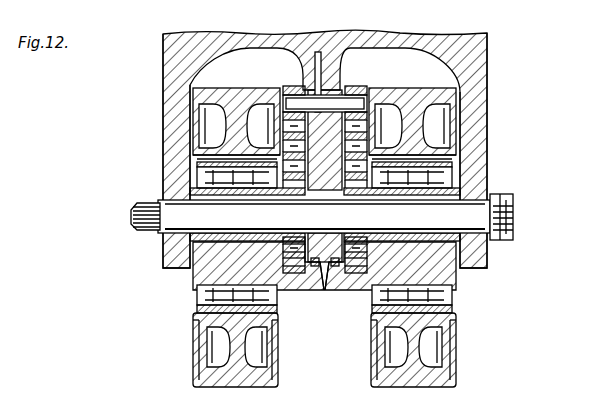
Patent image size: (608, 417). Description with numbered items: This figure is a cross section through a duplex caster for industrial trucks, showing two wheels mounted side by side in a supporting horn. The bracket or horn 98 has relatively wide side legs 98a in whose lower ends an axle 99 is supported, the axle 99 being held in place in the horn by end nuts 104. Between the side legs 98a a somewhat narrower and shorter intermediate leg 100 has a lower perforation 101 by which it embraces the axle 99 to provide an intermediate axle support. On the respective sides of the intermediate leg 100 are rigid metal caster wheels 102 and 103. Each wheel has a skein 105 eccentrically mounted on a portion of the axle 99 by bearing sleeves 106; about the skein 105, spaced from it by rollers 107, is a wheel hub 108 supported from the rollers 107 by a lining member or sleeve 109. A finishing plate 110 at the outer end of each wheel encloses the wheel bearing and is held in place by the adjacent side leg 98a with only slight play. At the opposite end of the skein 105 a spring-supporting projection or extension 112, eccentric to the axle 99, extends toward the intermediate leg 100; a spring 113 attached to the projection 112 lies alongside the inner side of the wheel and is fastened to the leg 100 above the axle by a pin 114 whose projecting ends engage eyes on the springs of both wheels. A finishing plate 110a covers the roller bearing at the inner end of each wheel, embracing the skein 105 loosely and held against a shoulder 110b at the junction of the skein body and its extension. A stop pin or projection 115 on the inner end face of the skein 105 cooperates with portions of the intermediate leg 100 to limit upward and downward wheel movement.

The bracket or horn 98 is at (491, 36).
The side legs 98a is at (175, 77).
The axle 99 is at (466, 212).
The intermediate leg 100 is at (336, 95).
The lower perforation 101 is at (333, 240).
The caster wheel 102 is at (200, 100).
The caster wheel 103 is at (445, 101).
The end nuts 104 is at (145, 193).
The skein 105 is at (198, 283).
The bearing sleeves 106 is at (230, 240).
The rollers 107 is at (200, 307).
The wheel hub 108 is at (205, 141).
The lining member or sleeve 109 is at (215, 172).
The finishing plate 110 is at (328, 318).
The finishing plate 110a is at (270, 314).
The shoulder 110b is at (288, 315).
The spring-supporting projection or extension 112 is at (297, 240).
The spring 113 is at (306, 313).
The pin 114 is at (318, 98).
The stop pin or projection 115 is at (334, 268).